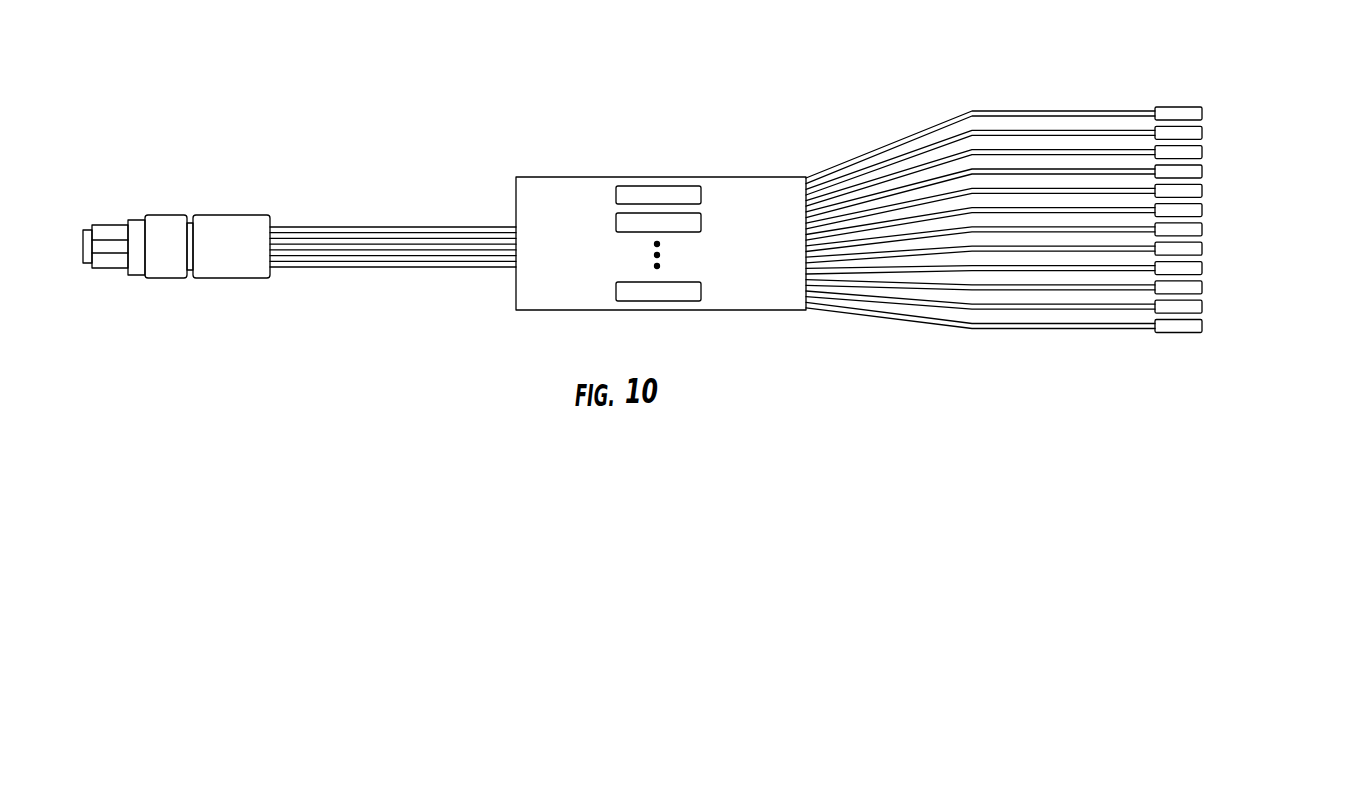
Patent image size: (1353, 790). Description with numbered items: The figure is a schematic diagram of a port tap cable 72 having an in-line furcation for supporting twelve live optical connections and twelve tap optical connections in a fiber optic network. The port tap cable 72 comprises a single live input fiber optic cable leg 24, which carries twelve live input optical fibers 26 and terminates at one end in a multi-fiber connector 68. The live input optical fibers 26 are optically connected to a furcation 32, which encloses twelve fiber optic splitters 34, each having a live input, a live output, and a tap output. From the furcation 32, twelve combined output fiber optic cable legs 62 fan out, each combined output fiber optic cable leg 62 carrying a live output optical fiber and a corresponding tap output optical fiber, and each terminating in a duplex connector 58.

The multi-fiber connector 68 is at (222, 278).
The live input fiber optic cable leg 24 is at (393, 207).
The live input optical fibers 26 is at (325, 227).
The furcation 32 is at (664, 220).
The fiber optic splitters 34 is at (613, 220).
The port tap cable 72 is at (670, 155).
The combined output fiber optic cable legs 62 is at (1070, 214).
The duplex connector 58 is at (1163, 107).